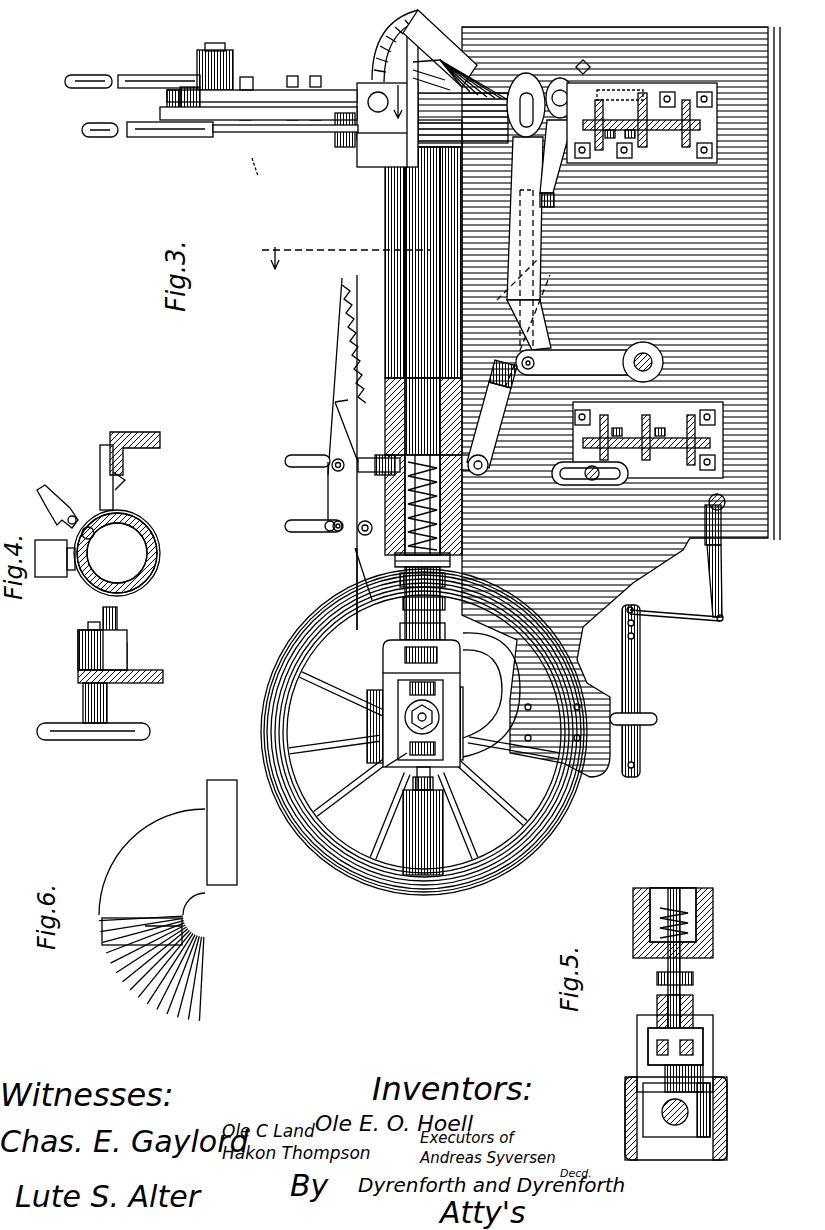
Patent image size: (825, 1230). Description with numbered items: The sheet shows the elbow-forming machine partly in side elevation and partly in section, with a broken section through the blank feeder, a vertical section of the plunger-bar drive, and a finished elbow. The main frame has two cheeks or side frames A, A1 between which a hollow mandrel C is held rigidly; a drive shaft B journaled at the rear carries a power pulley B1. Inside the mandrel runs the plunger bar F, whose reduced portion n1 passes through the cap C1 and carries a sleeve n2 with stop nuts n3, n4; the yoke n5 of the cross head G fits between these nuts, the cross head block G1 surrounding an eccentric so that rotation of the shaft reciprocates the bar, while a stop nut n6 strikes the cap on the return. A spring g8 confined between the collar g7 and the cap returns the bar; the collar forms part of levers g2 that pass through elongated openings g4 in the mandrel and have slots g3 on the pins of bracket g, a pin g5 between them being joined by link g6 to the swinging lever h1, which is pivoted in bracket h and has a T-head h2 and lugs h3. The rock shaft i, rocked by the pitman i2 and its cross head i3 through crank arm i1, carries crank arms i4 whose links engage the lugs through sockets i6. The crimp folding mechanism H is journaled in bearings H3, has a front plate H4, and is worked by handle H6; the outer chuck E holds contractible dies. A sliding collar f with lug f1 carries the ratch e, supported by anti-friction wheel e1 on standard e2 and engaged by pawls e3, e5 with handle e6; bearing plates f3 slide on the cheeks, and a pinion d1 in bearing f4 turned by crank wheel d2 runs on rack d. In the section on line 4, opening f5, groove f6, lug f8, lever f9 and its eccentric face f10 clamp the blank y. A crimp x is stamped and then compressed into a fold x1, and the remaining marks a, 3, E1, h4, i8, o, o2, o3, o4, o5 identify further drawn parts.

In FIG. 3, the power pulley B1 is at (330, 847).
In FIG. 5, the power pulley B1 is at (683, 1100).
In FIG. 3, the pitman i2 is at (473, 733).
In FIG. 3, the mandrel C is at (385, 402).
In FIG. 4, the mandrel C is at (150, 568).
In FIG. 5, the mandrel C is at (633, 900).
In FIG. 3, the collar g7 is at (395, 438).
In FIG. 3, the plunger bar F is at (385, 495).
In FIG. 5, the plunger bar F is at (683, 950).
In FIG. 3, the outer chuck E is at (404, 452).
In FIG. 3, the ratch e is at (355, 342).
In FIG. 3, the standard e2 is at (305, 435).
In FIG. 3, the pawl e3 is at (348, 422).
In FIG. 3, the pawl e5 is at (332, 518).
In FIG. 3, the handle e6 is at (293, 523).
In FIG. 3, the anti-friction wheel e1 is at (357, 545).
In FIG. 4, the anti-friction wheel e1 is at (70, 575).
In FIG. 3, the reduced portion n1 is at (395, 560).
In FIG. 5, the reduced portion n1 is at (693, 978).
In FIG. 3, the hub box a is at (415, 708).
In FIG. 3, the cap C1 is at (385, 585).
In FIG. 5, the cap C1 is at (650, 958).
In FIG. 3, the cross head i3 is at (407, 753).
In FIG. 3, the blank y is at (385, 173).
In FIG. 3, the section arrow 3 is at (399, 101).
In FIG. 3, the fold x1 is at (385, 10).
In FIG. 6, the fold x1 is at (212, 892).
In FIG. 3, the crimp x is at (460, 80).
In FIG. 6, the crimp x is at (190, 920).
In FIG. 3, the operating handle H6 is at (147, 77).
In FIG. 3, the clamp block h4 is at (213, 50).
In FIG. 3, the front plate H4 is at (263, 70).
In FIG. 3, the crimp folding mechanism H is at (365, 77).
In FIG. 3, the bearings H3 is at (372, 100).
In FIG. 3, the section mark E1 is at (262, 135).
In FIG. 3, the section line 4 is at (330, 258).
In FIG. 3, the sliding collar f is at (357, 200).
In FIG. 4, the sliding collar f is at (148, 528).
In FIG. 3, the lug f1 is at (357, 230).
In FIG. 4, the lug f1 is at (85, 580).
In FIG. 3, the bracket h is at (665, 127).
In FIG. 3, the T-head h2 is at (600, 83).
In FIG. 3, the lugs h3 is at (560, 67).
In FIG. 3, the longitudinal sockets i6 is at (528, 190).
In FIG. 3, the link g6 is at (522, 290).
In FIG. 3, the swinging lever h1 is at (642, 123).
In FIG. 3, the rock shaft i is at (573, 338).
In FIG. 3, the crank arm i1 is at (643, 342).
In FIG. 3, the crank arms i4 is at (605, 352).
In FIG. 3, the pin i8 is at (666, 368).
In FIG. 3, the pin g5 is at (482, 438).
In FIG. 3, the elongated openings g4 is at (593, 478).
In FIG. 3, the bracket g is at (637, 478).
In FIG. 3, the elongated slots g3 is at (570, 485).
In FIG. 3, the levers g2 is at (535, 470).
In FIG. 3, the spring g8 is at (470, 482).
In FIG. 5, the spring g8 is at (688, 905).
In FIG. 3, the pin o is at (722, 492).
In FIG. 3, the plate o2 is at (722, 560).
In FIG. 3, the bar o3 is at (683, 620).
In FIG. 3, the vertical bar o4 is at (640, 655).
In FIG. 3, the pin o5 is at (657, 720).
In FIG. 4, the lever f9 is at (47, 501).
In FIG. 4, the groove f6 is at (103, 558).
In FIG. 4, the side frame A1 is at (150, 417).
In FIG. 4, the opening f5 is at (117, 477).
In FIG. 4, the lug f8 is at (68, 500).
In FIG. 4, the eccentric bearing face f10 is at (100, 470).
In FIG. 4, the bearing plates f3 is at (100, 460).
In FIG. 4, the bearing f4 is at (78, 650).
In FIG. 4, the pinion d1 is at (78, 677).
In FIG. 4, the rack d is at (110, 690).
In FIG. 4, the side frame A is at (155, 683).
In FIG. 4, the crank wheel d2 is at (95, 740).
In FIG. 5, the stop nut n6 is at (683, 962).
In FIG. 5, the sleeve n2 is at (657, 998).
In FIG. 5, the stop nut n3 is at (660, 1003).
In FIG. 5, the cross head G is at (637, 1038).
In FIG. 5, the stop nut n4 is at (693, 1045).
In FIG. 5, the yoke n5 is at (715, 1055).
In FIG. 5, the cross head block G1 is at (660, 1100).
In FIG. 5, the drive shaft B is at (678, 1125).